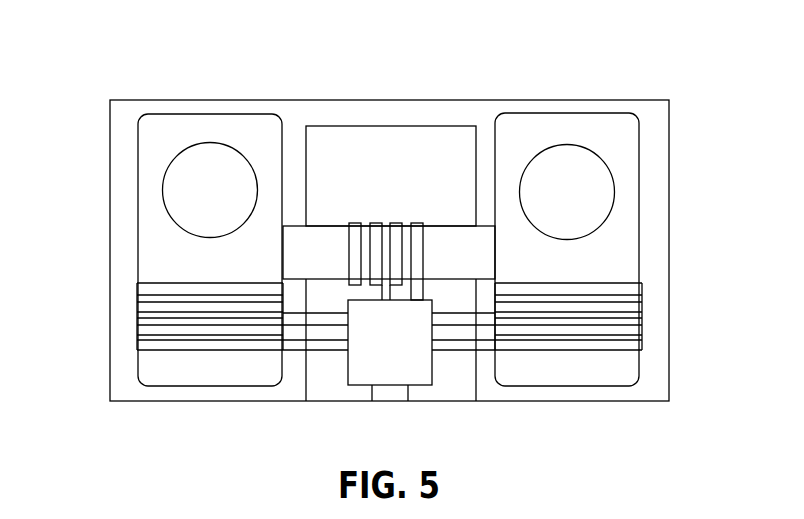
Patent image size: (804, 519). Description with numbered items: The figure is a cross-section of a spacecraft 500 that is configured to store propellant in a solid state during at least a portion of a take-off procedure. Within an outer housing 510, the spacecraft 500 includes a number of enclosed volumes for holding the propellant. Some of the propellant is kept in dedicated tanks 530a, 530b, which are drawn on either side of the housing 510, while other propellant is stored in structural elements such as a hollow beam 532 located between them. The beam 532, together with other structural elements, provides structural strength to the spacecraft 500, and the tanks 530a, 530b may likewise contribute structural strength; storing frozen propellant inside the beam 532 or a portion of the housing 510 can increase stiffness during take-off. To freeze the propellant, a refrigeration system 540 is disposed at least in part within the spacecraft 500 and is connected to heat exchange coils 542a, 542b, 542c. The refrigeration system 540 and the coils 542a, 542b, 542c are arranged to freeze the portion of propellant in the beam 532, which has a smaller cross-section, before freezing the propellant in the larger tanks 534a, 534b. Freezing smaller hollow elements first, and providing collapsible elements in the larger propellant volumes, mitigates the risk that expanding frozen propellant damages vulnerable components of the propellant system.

The spacecraft 500 is at (333, 60).
The housing 510 is at (402, 99).
The tank 530a is at (137, 186).
The tank 530b is at (642, 178).
The tank 534a is at (210, 143).
The tank 534b is at (571, 145).
The beam 532 is at (447, 280).
The refrigeration system 540 is at (347, 365).
The heat exchange coil 542a is at (137, 327).
The heat exchange coil 542b is at (417, 222).
The heat exchange coil 542c is at (643, 327).